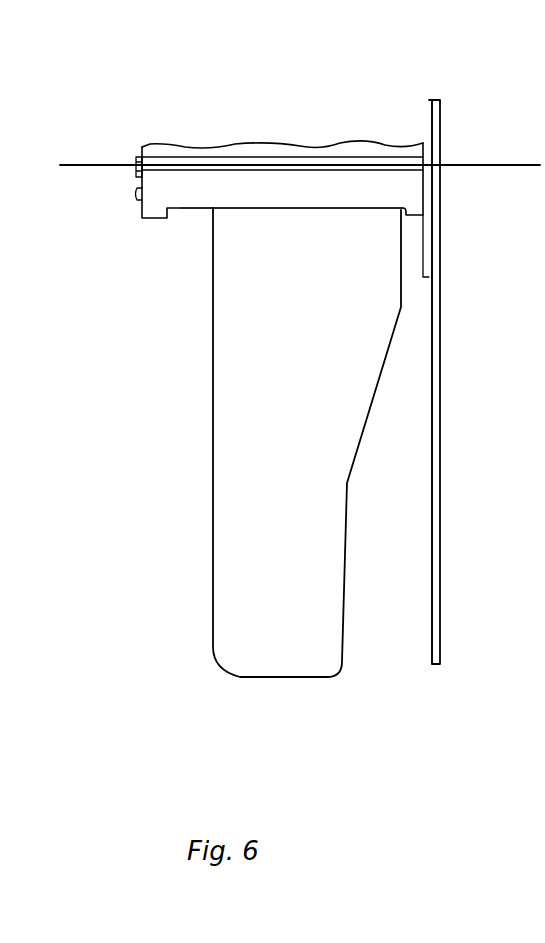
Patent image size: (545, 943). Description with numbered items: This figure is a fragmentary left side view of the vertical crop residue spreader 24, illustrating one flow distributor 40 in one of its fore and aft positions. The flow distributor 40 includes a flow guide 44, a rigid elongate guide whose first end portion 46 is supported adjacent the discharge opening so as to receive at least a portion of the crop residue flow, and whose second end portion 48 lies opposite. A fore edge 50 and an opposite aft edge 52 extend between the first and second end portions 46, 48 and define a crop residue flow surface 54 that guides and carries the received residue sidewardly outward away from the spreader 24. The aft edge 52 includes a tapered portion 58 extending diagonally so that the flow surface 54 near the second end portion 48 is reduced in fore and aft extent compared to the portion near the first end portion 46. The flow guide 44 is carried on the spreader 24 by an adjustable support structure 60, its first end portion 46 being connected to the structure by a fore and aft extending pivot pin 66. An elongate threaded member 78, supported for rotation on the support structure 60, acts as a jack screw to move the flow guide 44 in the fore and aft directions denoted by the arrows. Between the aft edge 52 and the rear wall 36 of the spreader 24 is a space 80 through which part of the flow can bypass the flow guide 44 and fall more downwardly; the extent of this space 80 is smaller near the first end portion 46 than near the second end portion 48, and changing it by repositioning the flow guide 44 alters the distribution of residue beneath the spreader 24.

The vertical crop residue spreader 24 is at (444, 93).
The adjustable support structure 60 is at (177, 146).
The first end portion 46 is at (303, 207).
The elongate threaded member 78 is at (138, 170).
The pivot pin 66 is at (137, 200).
The flow guide 44 is at (212, 455).
The crop residue flow surface 54 is at (270, 356).
The fore edge 50 is at (212, 395).
The tapered portion 58 is at (375, 392).
The aft edge 52 is at (356, 447).
The second end portion 48 is at (280, 678).
The flow distributor 40 is at (227, 676).
The space 80 is at (400, 576).
The rear wall 36 is at (433, 665).